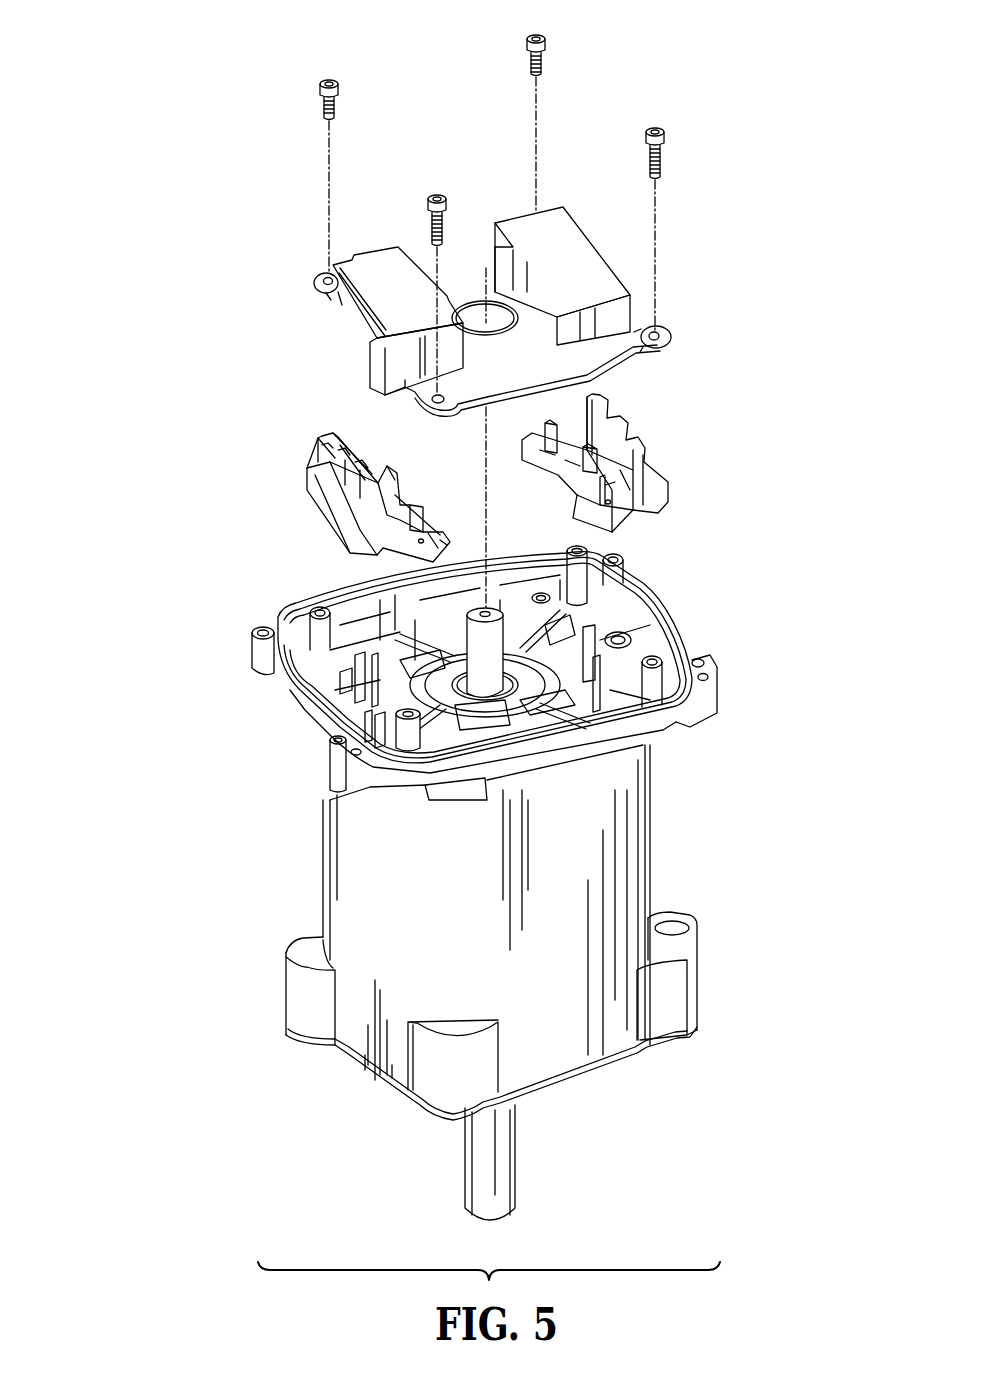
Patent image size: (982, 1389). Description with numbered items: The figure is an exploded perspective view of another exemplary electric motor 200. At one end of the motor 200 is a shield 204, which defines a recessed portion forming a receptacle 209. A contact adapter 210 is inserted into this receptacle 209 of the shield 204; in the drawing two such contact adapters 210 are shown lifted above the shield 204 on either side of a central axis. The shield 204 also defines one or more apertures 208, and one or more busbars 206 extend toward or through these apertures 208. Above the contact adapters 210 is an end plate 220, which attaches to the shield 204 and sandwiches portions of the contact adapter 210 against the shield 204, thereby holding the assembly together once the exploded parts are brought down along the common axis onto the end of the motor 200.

The motor 200 is at (222, 228).
The end plate 220 is at (622, 240).
The contact adapter 210 is at (312, 418).
The shield 204 is at (625, 663).
The busbar 206 is at (363, 658).
The aperture 208 is at (373, 717).
The receptacle 209 is at (340, 682).